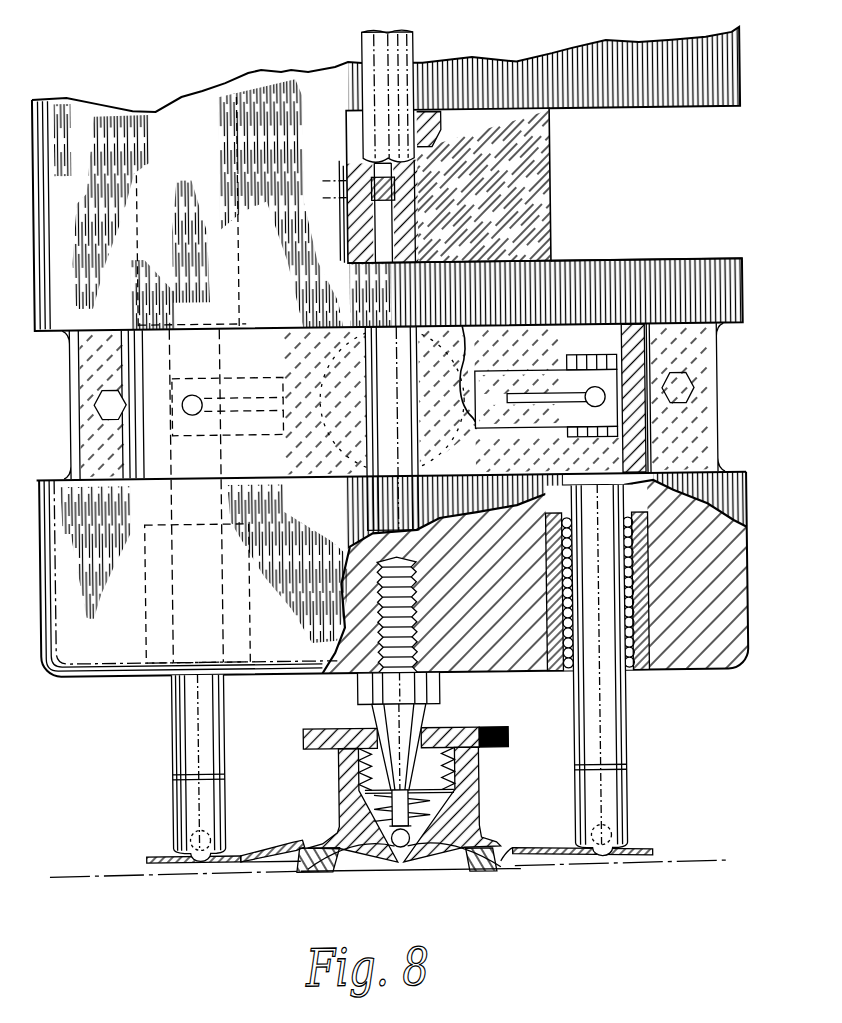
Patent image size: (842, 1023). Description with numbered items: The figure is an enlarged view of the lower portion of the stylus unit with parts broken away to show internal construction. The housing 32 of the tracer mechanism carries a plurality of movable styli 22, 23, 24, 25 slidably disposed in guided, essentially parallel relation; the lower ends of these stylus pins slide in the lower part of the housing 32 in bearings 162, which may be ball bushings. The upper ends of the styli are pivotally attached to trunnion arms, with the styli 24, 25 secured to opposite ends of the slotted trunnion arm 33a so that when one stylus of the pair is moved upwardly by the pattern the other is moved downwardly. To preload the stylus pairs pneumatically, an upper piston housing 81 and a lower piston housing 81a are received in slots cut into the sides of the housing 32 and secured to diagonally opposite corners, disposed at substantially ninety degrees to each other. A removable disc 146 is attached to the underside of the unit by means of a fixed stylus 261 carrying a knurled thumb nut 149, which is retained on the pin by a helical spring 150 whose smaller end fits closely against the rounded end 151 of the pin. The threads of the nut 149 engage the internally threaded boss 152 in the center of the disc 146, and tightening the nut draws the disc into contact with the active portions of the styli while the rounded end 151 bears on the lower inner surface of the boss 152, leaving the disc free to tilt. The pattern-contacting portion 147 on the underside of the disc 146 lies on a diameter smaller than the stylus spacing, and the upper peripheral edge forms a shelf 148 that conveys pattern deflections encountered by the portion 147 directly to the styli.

The stylus 22 is at (364, 54).
The upper piston housing 81 is at (556, 194).
The lower piston housing 81a is at (478, 357).
The trunnion arm 33a is at (517, 430).
The stylus 23 is at (367, 394).
The housing 32 is at (109, 680).
The stylus 24 is at (169, 762).
The stylus 25 is at (629, 745).
The bearing 162 is at (633, 671).
The fixed stylus 261 is at (441, 690).
The knurled thumb nut 149 is at (320, 726).
The internally threaded boss 152 is at (334, 799).
The helical spring 150 is at (456, 813).
The rounded end 151 is at (401, 868).
The shelf 148 is at (164, 852).
The removable disc 146 is at (257, 846).
The pattern-contacting portion 147 is at (299, 872).